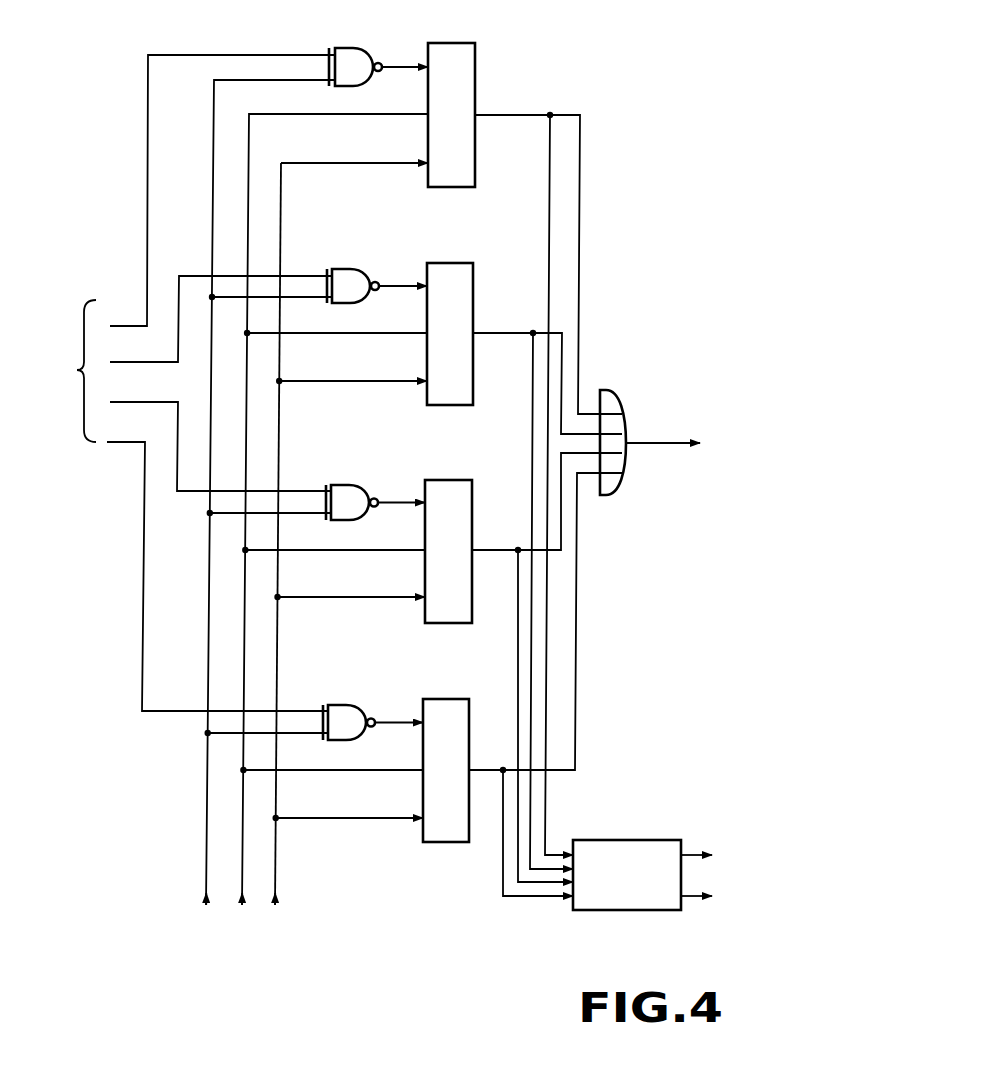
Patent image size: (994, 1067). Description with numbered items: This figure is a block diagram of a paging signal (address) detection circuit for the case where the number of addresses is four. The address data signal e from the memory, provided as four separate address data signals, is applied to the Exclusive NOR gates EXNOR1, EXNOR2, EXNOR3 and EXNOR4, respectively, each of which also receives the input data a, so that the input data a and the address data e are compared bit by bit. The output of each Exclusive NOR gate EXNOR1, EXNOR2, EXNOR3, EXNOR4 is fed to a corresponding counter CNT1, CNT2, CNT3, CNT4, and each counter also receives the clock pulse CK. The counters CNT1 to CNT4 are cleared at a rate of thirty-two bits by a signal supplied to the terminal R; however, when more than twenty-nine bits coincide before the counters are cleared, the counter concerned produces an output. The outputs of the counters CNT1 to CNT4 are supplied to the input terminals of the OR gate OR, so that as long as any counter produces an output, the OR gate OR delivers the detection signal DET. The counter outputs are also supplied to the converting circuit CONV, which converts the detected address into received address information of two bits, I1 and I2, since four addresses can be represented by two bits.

The Exclusive NOR gate EXNOR1 is at (365, 30).
The Exclusive NOR gate EXNOR2 is at (364, 249).
The Exclusive NOR gate EXNOR3 is at (362, 466).
The Exclusive NOR gate EXNOR4 is at (360, 684).
The counter CNT1 is at (478, 43).
The counter CNT2 is at (467, 262).
The counter CNT3 is at (462, 480).
The counter CNT4 is at (458, 698).
The OR gate OR is at (618, 390).
The converting circuit CONV is at (651, 838).
The detection signal DET is at (682, 445).
The received address information bit I1 is at (707, 858).
The received address information bit I2 is at (707, 899).
The input data a is at (267, 509).
The terminal R is at (332, 526).
The clock pulse CK is at (347, 550).
The address data signal e is at (199, 383).